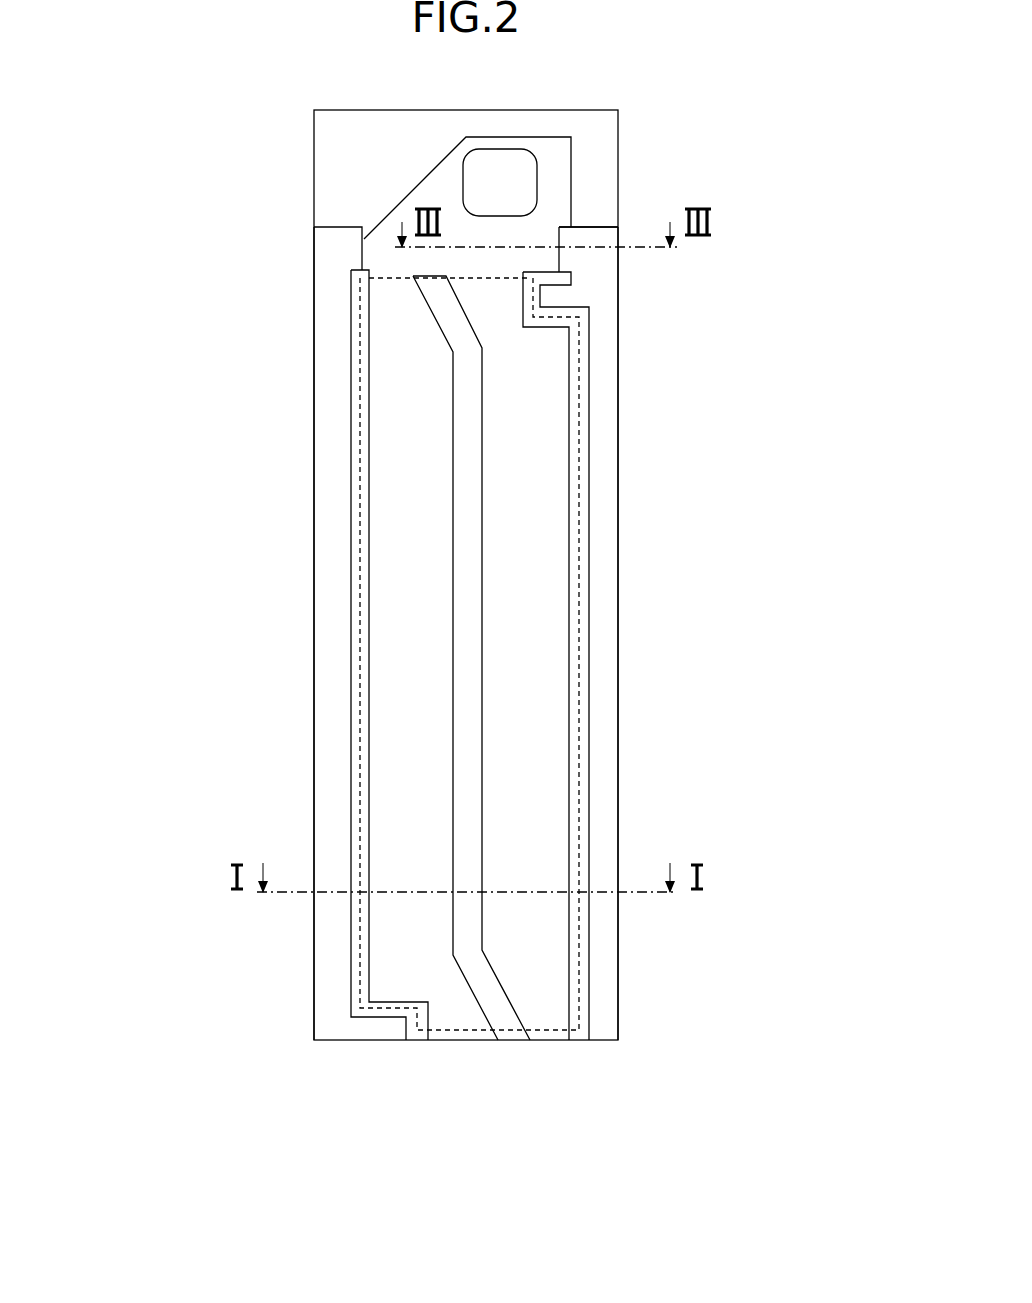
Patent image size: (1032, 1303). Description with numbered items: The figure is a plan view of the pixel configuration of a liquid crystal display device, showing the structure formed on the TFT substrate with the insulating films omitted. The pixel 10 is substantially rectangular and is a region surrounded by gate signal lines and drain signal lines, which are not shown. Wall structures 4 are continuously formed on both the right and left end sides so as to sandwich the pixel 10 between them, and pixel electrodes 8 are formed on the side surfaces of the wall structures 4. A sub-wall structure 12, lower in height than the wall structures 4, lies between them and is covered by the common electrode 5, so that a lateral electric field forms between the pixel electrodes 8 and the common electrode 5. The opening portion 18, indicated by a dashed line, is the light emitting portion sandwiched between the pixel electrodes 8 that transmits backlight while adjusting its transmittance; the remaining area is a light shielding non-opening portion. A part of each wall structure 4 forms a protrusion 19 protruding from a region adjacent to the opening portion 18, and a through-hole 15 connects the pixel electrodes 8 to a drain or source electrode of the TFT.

The wall structure 4 is at (328, 760).
The common electrode 5 is at (373, 132).
The pixel electrode 8 is at (408, 482).
The pixel 10 is at (364, 1112).
The sub-wall structure 12 is at (487, 1002).
The through-hole 15 is at (500, 152).
The opening portion 18 is at (548, 1032).
The protrusion 19 is at (608, 237).